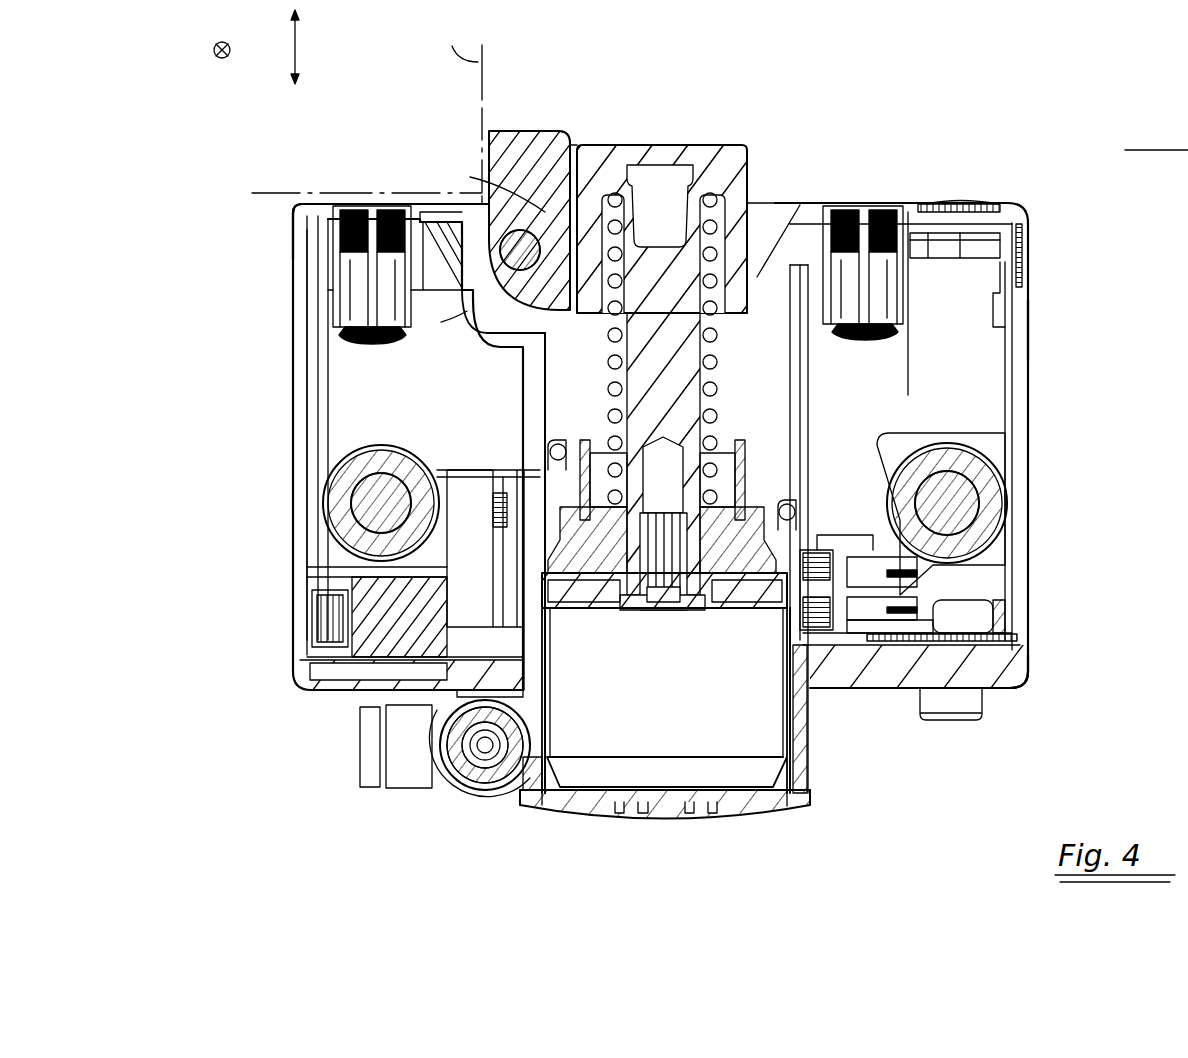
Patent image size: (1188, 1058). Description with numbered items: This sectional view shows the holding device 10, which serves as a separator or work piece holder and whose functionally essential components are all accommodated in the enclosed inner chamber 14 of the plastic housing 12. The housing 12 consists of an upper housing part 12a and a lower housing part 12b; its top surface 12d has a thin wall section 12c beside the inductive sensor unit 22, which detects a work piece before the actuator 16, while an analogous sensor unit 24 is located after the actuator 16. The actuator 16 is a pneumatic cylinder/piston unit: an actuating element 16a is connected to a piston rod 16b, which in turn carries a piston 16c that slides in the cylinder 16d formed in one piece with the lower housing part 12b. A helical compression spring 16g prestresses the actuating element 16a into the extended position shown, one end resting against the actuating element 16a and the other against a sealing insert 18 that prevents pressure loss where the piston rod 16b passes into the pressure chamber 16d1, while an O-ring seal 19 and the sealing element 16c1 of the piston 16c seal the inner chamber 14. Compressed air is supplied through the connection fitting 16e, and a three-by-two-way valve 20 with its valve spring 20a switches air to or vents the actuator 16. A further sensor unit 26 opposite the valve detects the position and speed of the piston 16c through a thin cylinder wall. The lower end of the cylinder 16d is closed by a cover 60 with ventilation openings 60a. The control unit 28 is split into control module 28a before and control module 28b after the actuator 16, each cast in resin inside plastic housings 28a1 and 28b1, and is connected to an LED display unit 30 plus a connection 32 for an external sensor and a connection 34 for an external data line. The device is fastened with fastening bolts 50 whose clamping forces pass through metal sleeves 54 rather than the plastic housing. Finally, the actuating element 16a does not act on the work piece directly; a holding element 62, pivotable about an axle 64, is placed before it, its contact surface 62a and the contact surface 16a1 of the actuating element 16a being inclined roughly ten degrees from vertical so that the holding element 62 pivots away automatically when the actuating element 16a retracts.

The holding device 10 is at (1076, 76).
The housing 12 is at (1028, 303).
The upper housing part 12a is at (1028, 326).
The lower housing part 12b is at (1012, 682).
The wall section 12c is at (382, 204).
The top surface 12d is at (300, 204).
The inner chamber 14 is at (891, 204).
The actuator 16 is at (648, 72).
The actuating element 16a is at (742, 166).
The contact surface 16a1 is at (557, 135).
The piston rod 16b is at (714, 151).
The piston 16c is at (722, 616).
The sealing element 16c1 is at (600, 616).
The cylinder 16d is at (792, 646).
The pressure chamber 16d1 is at (535, 545).
The connection fitting 16e is at (410, 779).
The helical compression spring 16g is at (762, 204).
The sealing insert 18 is at (1000, 444).
The O-ring seal 19 is at (472, 521).
The 3/2-way valve 20 is at (380, 631).
The valve spring 20a is at (312, 649).
The sensor unit 22 is at (357, 204).
The sensor unit 24 is at (855, 204).
The sensor unit 26 is at (870, 646).
The control unit 28 is at (247, 306).
The control module 28a is at (350, 391).
The plastic housing 28a1 is at (322, 348).
The control module 28b is at (1005, 379).
The plastic housing 28b1 is at (1028, 270).
The display unit 30 is at (962, 204).
The connection 32 is at (951, 704).
The connection 34 is at (950, 714).
The fastening bolt 50 is at (1003, 546).
The metal sleeve 54 is at (990, 486).
The cover 60 is at (740, 809).
The ventilation openings 60a is at (620, 813).
The holding element 62 is at (528, 146).
The contact surface 62a is at (602, 181).
The axle 64 is at (481, 306).